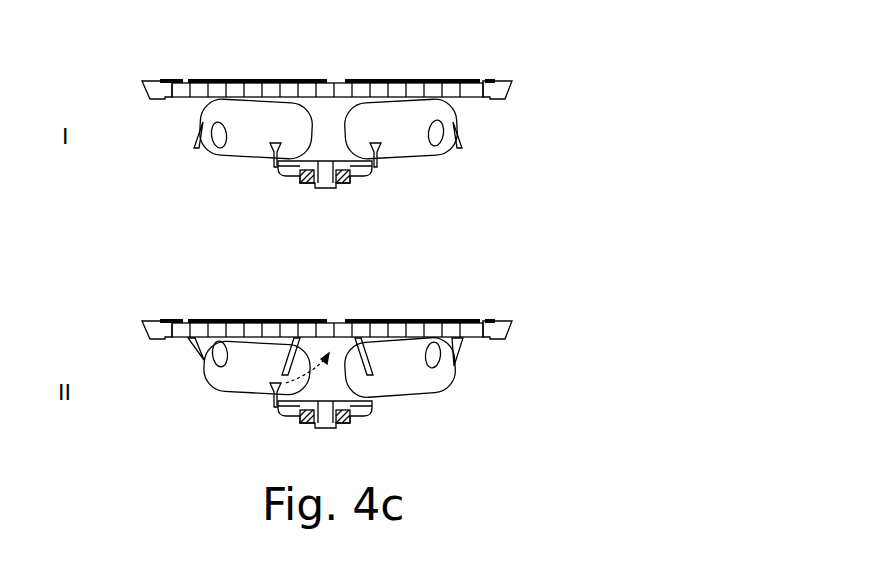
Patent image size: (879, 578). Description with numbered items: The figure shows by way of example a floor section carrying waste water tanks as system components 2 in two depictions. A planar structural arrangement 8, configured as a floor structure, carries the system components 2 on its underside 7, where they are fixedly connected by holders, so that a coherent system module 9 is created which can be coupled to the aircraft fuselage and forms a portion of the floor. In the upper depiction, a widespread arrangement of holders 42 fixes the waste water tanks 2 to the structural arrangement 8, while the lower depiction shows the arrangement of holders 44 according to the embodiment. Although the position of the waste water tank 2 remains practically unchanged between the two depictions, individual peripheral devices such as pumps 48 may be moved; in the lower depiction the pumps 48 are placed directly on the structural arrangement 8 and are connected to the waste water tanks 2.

The system components 2 is at (264, 120).
The underside 7 is at (272, 385).
The structural arrangement 8 is at (230, 336).
The system module 9 is at (503, 294).
The holders 42 is at (272, 156).
The holders 44 is at (294, 337).
The pumps 48 is at (214, 145).